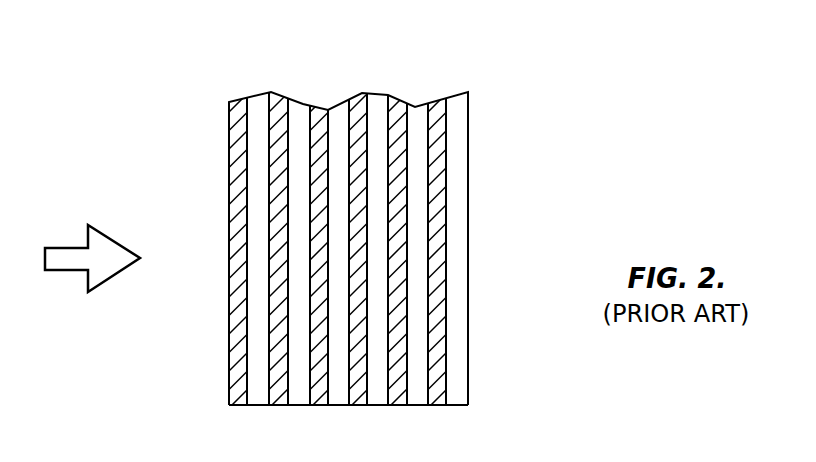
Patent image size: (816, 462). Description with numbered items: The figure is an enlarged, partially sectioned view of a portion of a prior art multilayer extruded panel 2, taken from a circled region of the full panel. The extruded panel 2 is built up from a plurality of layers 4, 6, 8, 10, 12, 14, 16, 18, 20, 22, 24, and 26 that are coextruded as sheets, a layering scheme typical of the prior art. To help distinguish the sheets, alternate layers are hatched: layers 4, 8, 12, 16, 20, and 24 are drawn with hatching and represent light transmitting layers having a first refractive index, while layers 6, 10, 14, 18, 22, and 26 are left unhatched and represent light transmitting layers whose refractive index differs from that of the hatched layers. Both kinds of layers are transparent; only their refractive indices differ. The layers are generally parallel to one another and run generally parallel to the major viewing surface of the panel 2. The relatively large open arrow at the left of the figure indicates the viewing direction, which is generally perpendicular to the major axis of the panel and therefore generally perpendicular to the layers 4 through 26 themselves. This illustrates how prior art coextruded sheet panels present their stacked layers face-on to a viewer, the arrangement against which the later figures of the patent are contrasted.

The multilayer extruded panel 2 is at (505, 205).
The layer 4 is at (227, 102).
The layer 6 is at (247, 96).
The layer 8 is at (270, 91).
The layer 10 is at (297, 97).
The layer 12 is at (326, 108).
The layer 14 is at (333, 106).
The layer 16 is at (356, 95).
The layer 18 is at (376, 92).
The layer 20 is at (398, 96).
The layer 22 is at (420, 103).
The layer 24 is at (437, 98).
The layer 26 is at (468, 112).